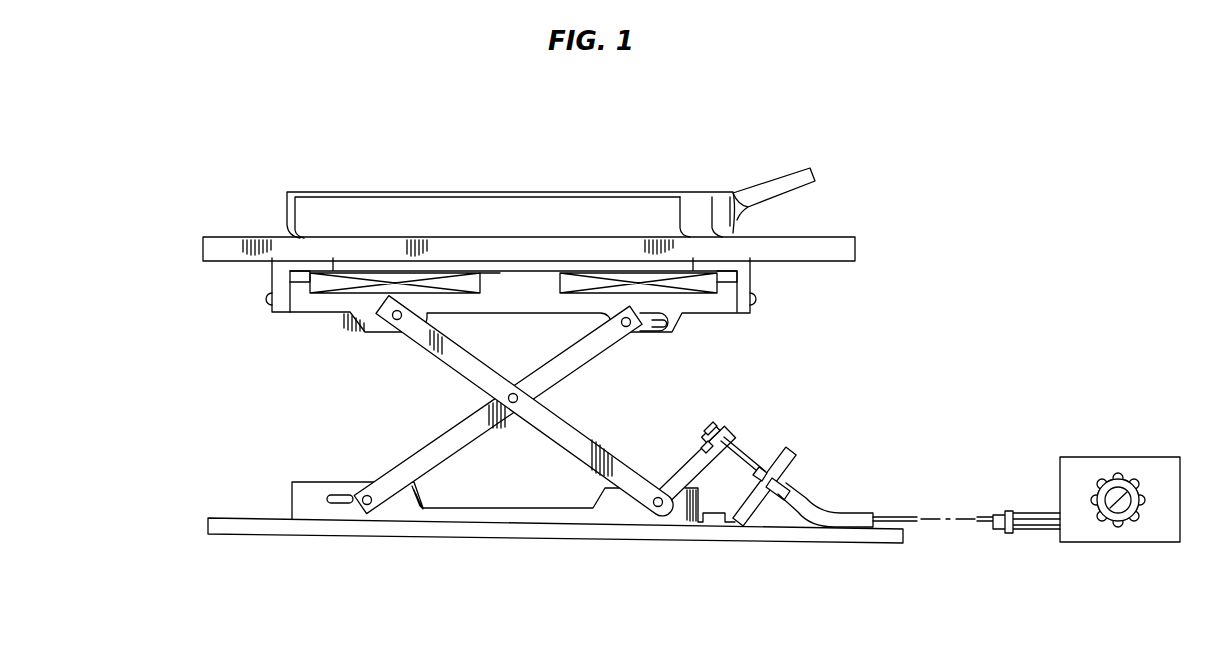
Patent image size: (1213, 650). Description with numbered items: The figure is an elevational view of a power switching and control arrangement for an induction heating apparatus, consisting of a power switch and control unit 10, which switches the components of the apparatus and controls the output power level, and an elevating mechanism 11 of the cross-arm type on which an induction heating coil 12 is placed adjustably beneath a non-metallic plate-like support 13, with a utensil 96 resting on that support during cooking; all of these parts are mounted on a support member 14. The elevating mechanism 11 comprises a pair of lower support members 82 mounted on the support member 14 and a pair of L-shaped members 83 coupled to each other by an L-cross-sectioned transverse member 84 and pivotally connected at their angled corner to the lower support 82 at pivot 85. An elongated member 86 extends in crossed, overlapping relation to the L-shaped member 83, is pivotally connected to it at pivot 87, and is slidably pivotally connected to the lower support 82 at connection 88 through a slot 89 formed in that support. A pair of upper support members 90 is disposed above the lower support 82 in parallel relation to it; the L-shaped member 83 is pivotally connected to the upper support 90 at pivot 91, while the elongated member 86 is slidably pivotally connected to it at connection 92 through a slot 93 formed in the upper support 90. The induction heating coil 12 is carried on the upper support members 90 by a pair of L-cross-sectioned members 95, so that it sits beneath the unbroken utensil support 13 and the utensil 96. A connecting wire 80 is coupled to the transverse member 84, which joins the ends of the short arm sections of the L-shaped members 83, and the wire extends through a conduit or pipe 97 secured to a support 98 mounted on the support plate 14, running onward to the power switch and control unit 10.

The power switch and control unit 10 is at (1130, 455).
The elevating mechanism 11 is at (268, 390).
The induction heating coil 12 is at (560, 281).
The plate-like support 13 is at (230, 240).
The support member 14 is at (455, 535).
The connecting wire 80 is at (900, 522).
The lower support member 82 is at (522, 508).
The L-shaped member 83 is at (450, 362).
The transverse member 84 is at (733, 424).
The pivotal connection 85 is at (657, 506).
The elongated member 86 is at (560, 372).
The pivotal connection 87 is at (515, 393).
The slidable pivotal connection 88 is at (362, 508).
The slot 89 is at (343, 495).
The upper support member 90 is at (318, 305).
The pivotal connection 91 is at (390, 326).
The slidable pivotal connection 92 is at (622, 327).
The slot 93 is at (663, 333).
The L-cross-sectioned member 95 is at (273, 275).
The utensil 96 is at (422, 203).
The conduit 97 is at (833, 510).
The support 98 is at (793, 445).